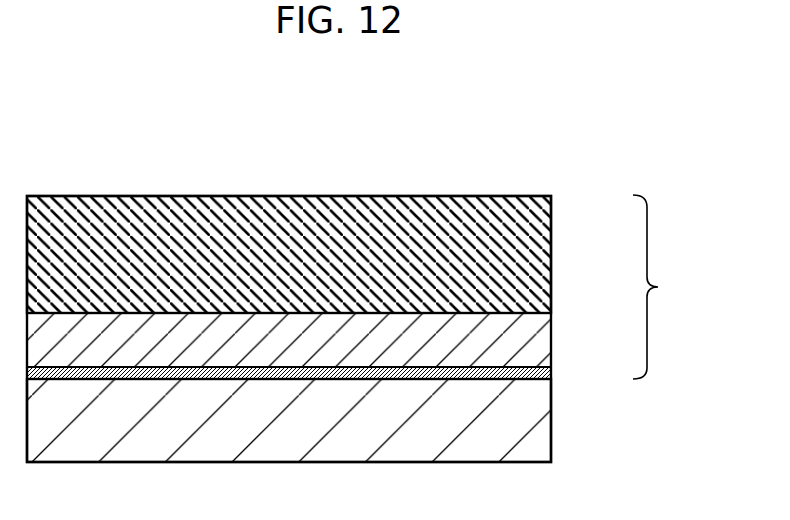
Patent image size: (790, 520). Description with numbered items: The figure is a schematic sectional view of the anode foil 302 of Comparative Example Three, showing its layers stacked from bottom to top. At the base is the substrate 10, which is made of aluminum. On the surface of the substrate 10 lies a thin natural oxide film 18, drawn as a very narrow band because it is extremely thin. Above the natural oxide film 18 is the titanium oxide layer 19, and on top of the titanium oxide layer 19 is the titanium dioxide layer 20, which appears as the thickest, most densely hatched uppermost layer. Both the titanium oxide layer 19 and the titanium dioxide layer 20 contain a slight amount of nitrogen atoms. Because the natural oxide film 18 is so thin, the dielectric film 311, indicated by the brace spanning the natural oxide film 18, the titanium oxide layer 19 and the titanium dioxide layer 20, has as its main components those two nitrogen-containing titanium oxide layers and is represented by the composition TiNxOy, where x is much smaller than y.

The anode foil 302 is at (137, 167).
The dielectric film 311 is at (670, 287).
The titanium dioxide layer 20 is at (535, 253).
The titanium oxide layer 19 is at (535, 341).
The natural oxide film 18 is at (548, 373).
The substrate 10 is at (540, 437).